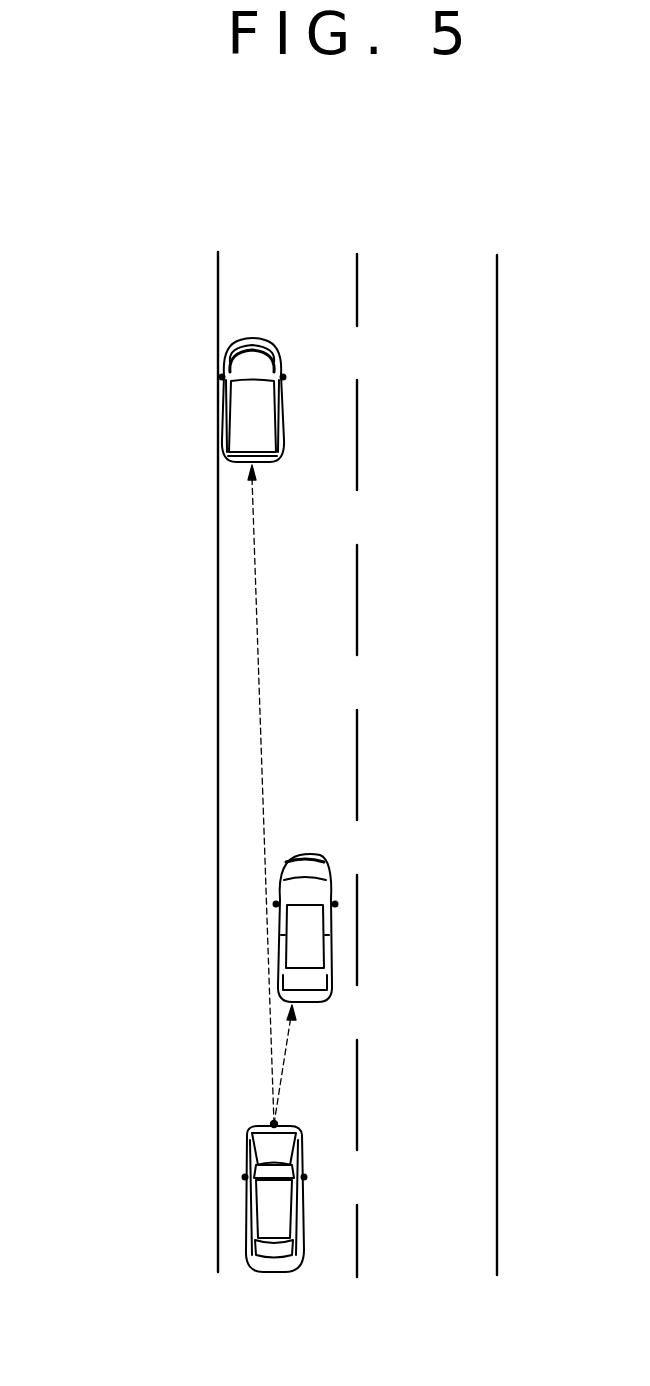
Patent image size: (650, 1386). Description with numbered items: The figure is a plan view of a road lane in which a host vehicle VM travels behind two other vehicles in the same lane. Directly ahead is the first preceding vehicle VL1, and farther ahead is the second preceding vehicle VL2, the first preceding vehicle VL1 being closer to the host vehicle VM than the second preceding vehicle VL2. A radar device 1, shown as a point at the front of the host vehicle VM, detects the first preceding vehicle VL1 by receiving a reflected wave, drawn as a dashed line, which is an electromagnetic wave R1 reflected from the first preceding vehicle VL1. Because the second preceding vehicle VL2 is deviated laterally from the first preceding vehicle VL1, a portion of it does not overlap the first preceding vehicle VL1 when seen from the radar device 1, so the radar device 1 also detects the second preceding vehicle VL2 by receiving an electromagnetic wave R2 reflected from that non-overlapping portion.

The radar device 1 is at (276, 1123).
The host vehicle VM is at (248, 1198).
The first preceding vehicle VL1 is at (277, 955).
The second preceding vehicle VL2 is at (222, 420).
The electromagnetic wave R1 is at (300, 1046).
The electromagnetic wave R2 is at (258, 668).